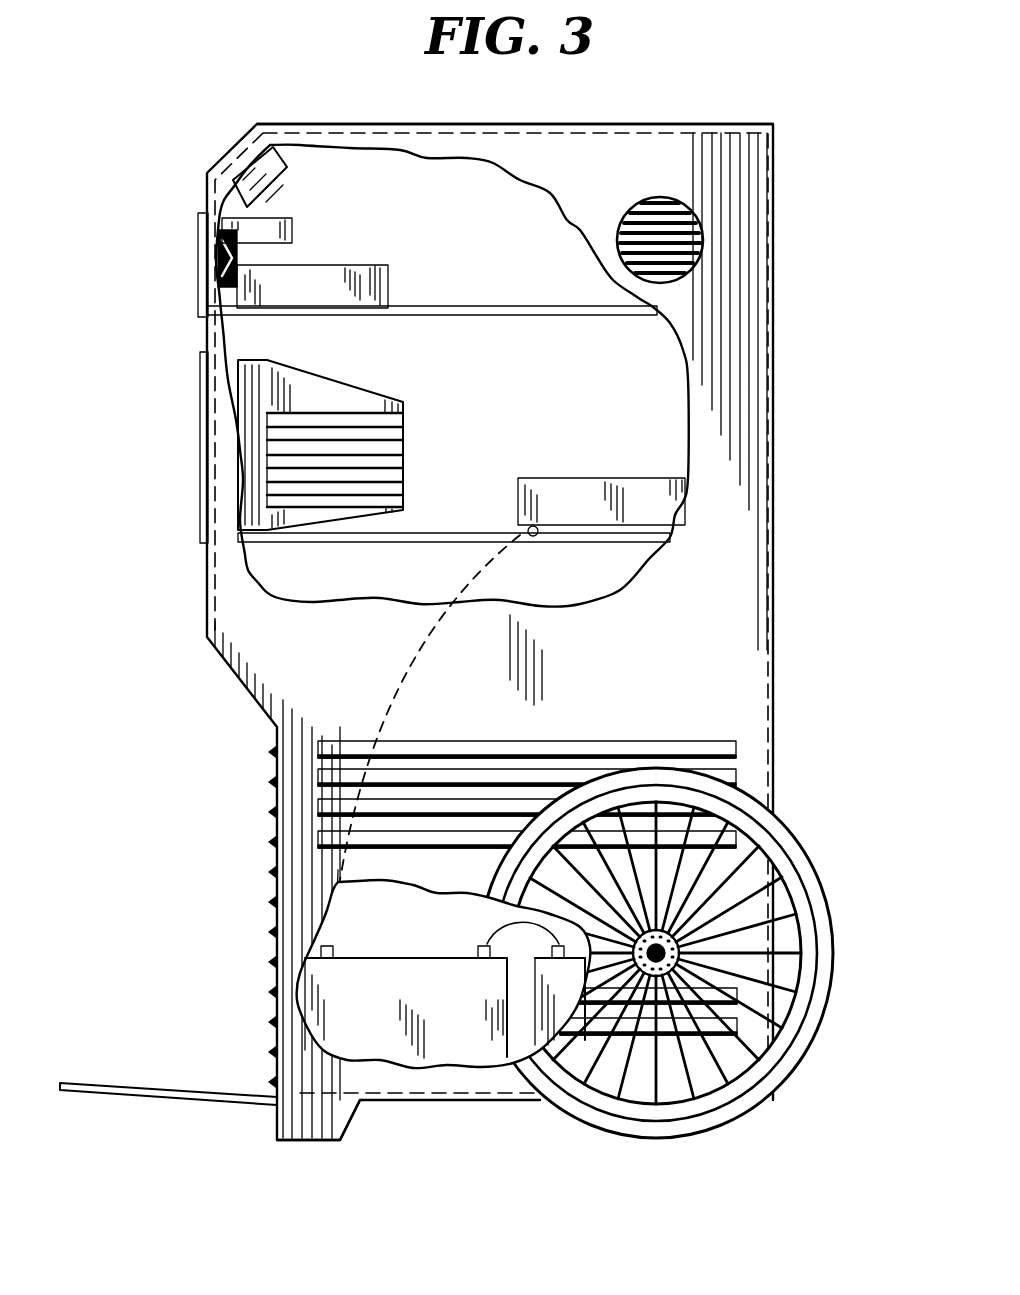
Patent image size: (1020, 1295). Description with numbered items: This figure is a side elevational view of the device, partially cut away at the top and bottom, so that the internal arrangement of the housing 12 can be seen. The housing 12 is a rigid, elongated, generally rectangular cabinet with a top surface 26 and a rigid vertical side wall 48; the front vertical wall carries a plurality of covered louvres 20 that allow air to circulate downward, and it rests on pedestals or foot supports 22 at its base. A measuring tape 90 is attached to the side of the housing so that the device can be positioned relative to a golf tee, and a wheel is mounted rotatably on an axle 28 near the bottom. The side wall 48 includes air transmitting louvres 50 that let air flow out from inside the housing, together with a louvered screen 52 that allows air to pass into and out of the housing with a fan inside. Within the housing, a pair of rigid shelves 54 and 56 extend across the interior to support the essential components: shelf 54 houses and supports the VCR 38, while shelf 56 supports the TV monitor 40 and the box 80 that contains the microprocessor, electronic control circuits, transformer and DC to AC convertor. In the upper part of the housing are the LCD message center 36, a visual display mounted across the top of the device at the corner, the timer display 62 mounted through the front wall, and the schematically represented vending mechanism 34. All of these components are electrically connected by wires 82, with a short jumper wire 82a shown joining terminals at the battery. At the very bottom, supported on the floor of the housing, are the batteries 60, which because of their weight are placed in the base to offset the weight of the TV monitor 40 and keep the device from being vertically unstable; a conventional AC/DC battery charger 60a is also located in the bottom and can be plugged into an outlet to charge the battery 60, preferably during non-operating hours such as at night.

The housing 12 is at (782, 308).
The covered louvres 20 is at (270, 832).
The pedestals or foot supports 22 is at (320, 1125).
The top surface 26 is at (738, 125).
The axle 28 is at (808, 880).
The vending mechanism 34 is at (213, 222).
The visual display message center 36 is at (258, 160).
The VCR 38 is at (377, 265).
The TV monitor 40 is at (406, 432).
The opposite side wall 48 is at (750, 530).
The air transmitting louvres 50 is at (500, 750).
The louvered screen 52 is at (705, 243).
The shelf 54 is at (540, 305).
The shelf 56 is at (518, 533).
The battery 60 is at (347, 960).
The battery charger 60a is at (543, 963).
The timer display 62 is at (294, 223).
The box 80 is at (625, 478).
The wires 82 is at (262, 212).
The jumper wire 82a is at (520, 932).
The measuring tape 90 is at (78, 1083).